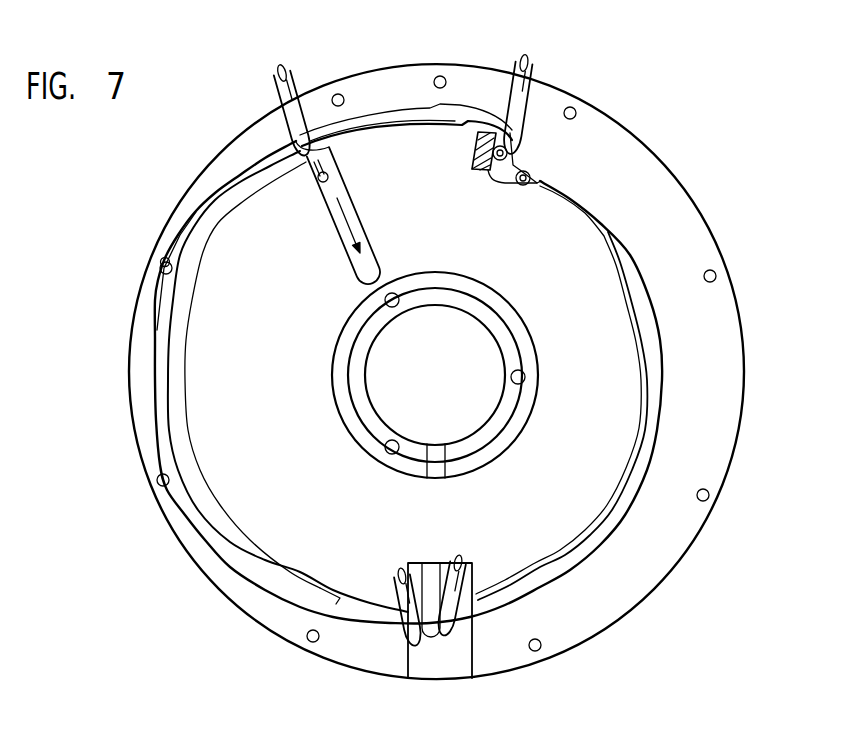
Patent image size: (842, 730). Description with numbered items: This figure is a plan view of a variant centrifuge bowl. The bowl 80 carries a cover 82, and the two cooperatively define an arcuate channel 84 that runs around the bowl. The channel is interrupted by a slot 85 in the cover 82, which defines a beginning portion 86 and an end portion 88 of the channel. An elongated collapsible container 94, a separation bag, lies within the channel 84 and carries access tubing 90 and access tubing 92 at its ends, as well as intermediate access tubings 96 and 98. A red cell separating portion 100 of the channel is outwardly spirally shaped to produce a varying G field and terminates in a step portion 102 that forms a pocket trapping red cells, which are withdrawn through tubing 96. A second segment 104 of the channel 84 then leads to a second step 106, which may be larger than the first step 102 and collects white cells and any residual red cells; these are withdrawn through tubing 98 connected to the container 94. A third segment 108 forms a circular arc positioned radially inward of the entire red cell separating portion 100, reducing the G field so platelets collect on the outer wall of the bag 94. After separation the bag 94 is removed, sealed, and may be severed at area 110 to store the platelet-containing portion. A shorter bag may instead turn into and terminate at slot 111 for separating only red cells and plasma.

The bowl 80 is at (622, 629).
The cover 82 is at (722, 403).
The arcuate channel 84 is at (268, 574).
The slot 85 is at (439, 662).
The beginning portion 86 is at (353, 635).
The end portion 88 is at (488, 612).
The access tubing 90 is at (390, 638).
The access tubing 92 is at (470, 622).
The elongated collapsible container 94 is at (150, 378).
The intermediate access tubing 96 is at (279, 70).
The intermediate access tubing 98 is at (531, 66).
The red cell separating portion 100 is at (172, 457).
The step portion 102 is at (337, 102).
The second segment 104 is at (432, 98).
The second step 106 is at (520, 140).
The third segment 108 is at (630, 255).
The area 110 is at (517, 158).
The slot 111 is at (327, 193).